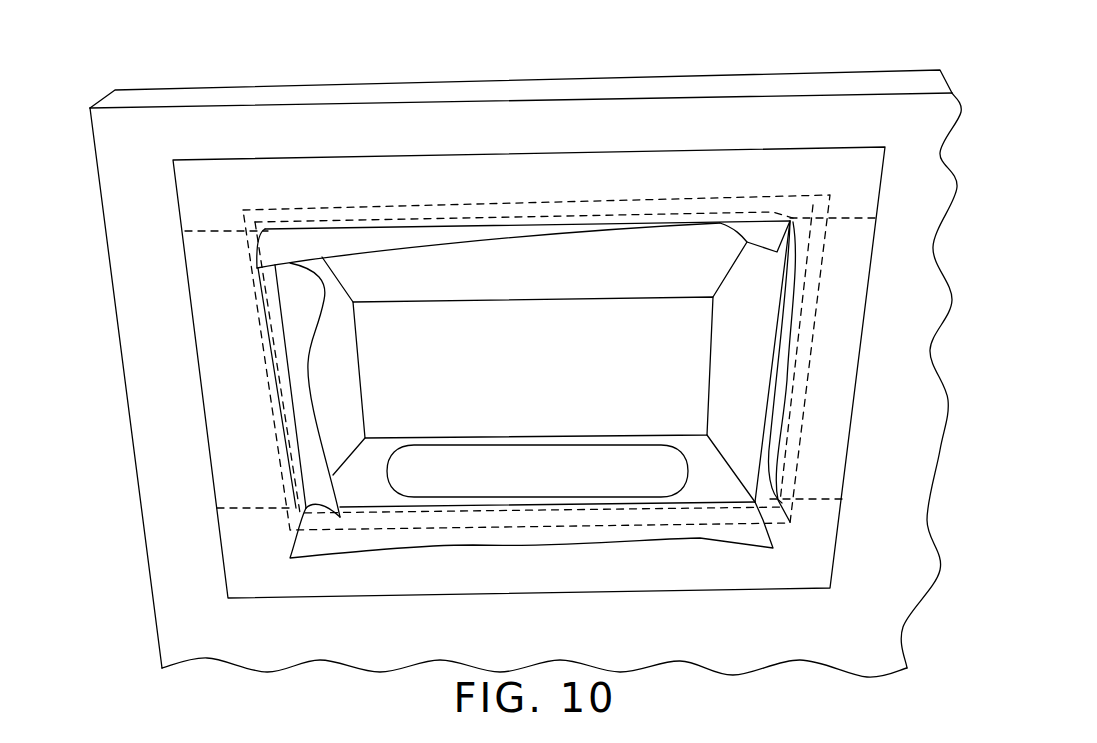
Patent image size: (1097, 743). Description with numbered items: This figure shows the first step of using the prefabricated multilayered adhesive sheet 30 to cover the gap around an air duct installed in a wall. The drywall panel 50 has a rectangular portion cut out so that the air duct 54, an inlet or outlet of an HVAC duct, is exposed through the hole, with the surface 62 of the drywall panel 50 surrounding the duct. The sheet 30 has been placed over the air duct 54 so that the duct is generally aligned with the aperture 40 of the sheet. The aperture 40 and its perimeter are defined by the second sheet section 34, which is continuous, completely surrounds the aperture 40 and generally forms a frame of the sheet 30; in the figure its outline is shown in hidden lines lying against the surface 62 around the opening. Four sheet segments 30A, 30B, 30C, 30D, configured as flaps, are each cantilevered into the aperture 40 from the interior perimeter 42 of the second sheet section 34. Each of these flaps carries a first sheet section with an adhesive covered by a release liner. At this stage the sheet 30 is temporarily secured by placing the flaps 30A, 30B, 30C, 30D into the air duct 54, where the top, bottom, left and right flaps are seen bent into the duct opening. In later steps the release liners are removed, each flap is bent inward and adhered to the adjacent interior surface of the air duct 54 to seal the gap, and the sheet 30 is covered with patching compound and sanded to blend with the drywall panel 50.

The drywall panel 50 is at (107, 95).
The surface of the drywall panel 62 is at (408, 125).
The aperture 40 is at (629, 258).
The multilayered adhesive sheet 30 is at (205, 340).
The second sheet section 34 is at (228, 433).
The sheet segment 30A is at (343, 242).
The sheet segment 30B is at (570, 517).
The sheet segment 30C is at (308, 412).
The sheet segment 30D is at (780, 323).
The air duct 54 is at (566, 347).
The interior perimeter of the second sheet section 42 is at (770, 357).